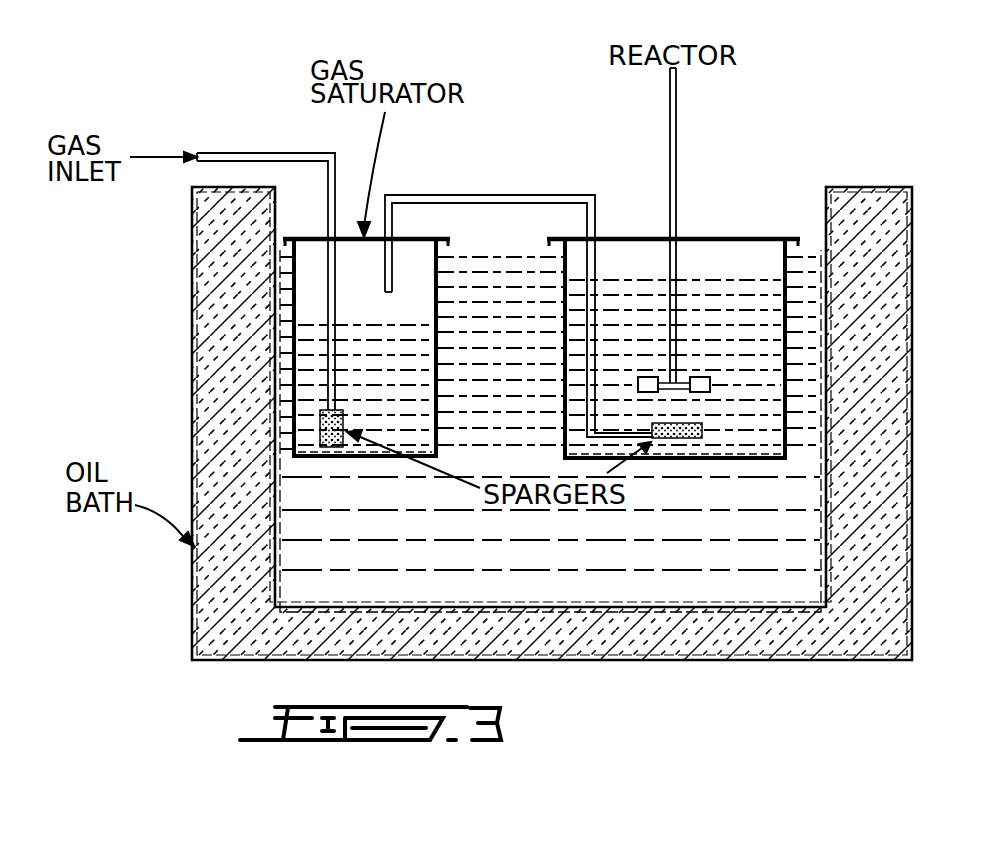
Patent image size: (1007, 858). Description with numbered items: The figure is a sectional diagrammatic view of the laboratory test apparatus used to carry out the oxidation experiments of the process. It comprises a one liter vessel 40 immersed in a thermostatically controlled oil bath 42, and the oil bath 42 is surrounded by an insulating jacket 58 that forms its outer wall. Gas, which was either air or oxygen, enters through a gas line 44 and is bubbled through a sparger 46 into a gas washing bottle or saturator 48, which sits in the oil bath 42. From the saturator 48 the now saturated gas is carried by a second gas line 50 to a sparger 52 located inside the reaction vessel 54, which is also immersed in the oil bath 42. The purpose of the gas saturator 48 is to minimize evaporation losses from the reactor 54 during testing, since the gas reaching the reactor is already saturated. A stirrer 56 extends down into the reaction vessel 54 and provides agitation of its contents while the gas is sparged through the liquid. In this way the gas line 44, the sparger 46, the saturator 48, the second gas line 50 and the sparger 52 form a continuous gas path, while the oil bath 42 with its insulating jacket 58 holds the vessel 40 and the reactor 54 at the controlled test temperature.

The vessel 40 is at (280, 548).
The oil bath 42 is at (760, 560).
The gas line 44 is at (250, 152).
The sparger 46 is at (340, 453).
The gas saturator 48 is at (427, 427).
The second gas line 50 is at (502, 195).
The sparger 52 is at (700, 440).
The reaction vessel 54 is at (575, 408).
The stirrer 56 is at (708, 386).
The insulating jacket 58 is at (232, 376).